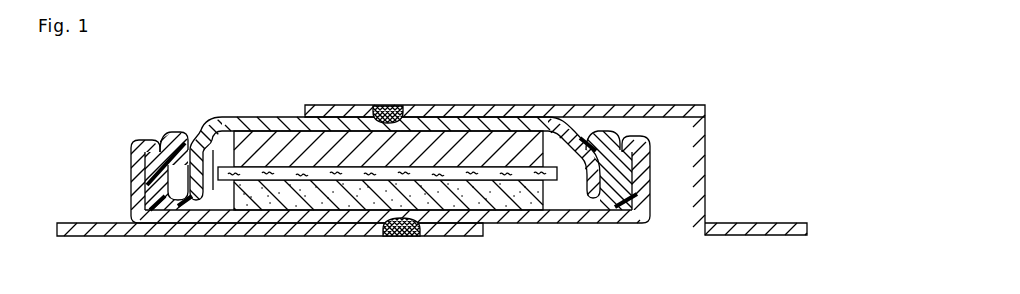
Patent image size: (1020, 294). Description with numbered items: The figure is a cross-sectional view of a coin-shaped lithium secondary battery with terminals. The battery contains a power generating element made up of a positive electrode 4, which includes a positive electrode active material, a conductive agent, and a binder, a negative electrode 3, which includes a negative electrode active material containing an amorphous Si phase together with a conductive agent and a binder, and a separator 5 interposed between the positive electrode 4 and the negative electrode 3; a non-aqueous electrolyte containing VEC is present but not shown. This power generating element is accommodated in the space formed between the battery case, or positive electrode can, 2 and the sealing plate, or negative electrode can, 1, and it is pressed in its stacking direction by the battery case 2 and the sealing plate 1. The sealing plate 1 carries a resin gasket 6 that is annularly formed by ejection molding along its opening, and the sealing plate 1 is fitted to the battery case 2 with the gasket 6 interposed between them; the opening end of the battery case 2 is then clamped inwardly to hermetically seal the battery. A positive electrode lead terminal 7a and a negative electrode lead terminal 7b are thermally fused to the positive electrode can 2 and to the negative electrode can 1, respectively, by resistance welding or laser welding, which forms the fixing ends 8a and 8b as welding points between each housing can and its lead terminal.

The sealing plate (negative electrode can) 1 is at (256, 122).
The battery case (positive electrode can) 2 is at (642, 198).
The negative electrode 3 is at (320, 142).
The positive electrode 4 is at (493, 190).
The separator 5 is at (427, 168).
The resin gasket 6 is at (603, 133).
The positive electrode lead terminal 7a is at (445, 234).
The negative electrode lead terminal 7b is at (670, 110).
The fixing end 8a is at (395, 237).
The fixing end 8b is at (392, 107).